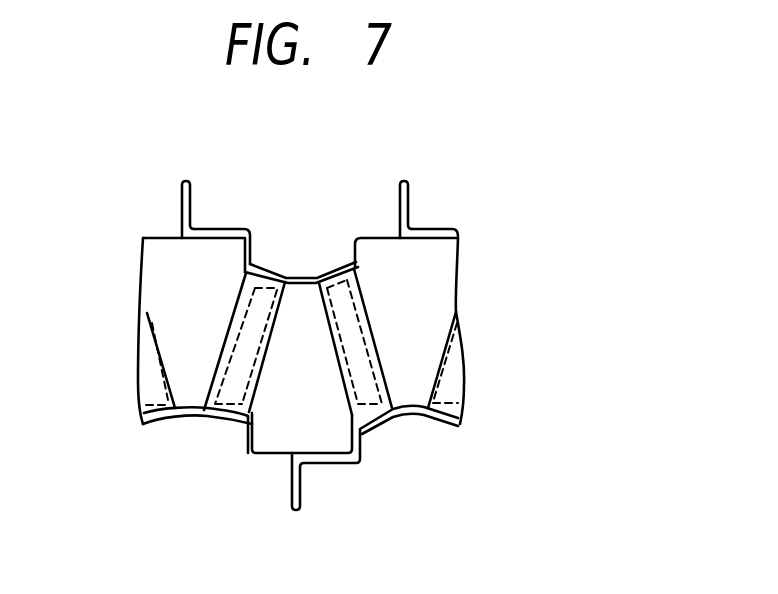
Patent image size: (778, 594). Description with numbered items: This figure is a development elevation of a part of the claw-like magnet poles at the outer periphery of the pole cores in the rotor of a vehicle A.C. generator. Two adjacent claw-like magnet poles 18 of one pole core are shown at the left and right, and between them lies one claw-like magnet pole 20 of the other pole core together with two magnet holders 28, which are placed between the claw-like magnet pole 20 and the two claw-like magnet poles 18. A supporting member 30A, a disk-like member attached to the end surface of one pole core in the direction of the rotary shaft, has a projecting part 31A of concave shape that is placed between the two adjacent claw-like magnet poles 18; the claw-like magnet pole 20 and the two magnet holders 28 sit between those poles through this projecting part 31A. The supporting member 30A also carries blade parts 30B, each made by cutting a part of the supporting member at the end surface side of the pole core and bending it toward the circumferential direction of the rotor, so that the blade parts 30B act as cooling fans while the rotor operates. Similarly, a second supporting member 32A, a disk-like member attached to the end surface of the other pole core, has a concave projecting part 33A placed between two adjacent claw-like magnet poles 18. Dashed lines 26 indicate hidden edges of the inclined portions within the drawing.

The claw-like magnet pole 18 is at (167, 262).
The claw-like magnet pole 20 is at (322, 434).
The hidden edge of inclined portion 26 is at (368, 378).
The magnet holder 28 is at (365, 302).
The supporting member 30A is at (218, 230).
The blade part 30B is at (188, 199).
The projecting part 31A is at (303, 275).
The supporting member 32A is at (340, 464).
The projecting part 33A is at (190, 421).